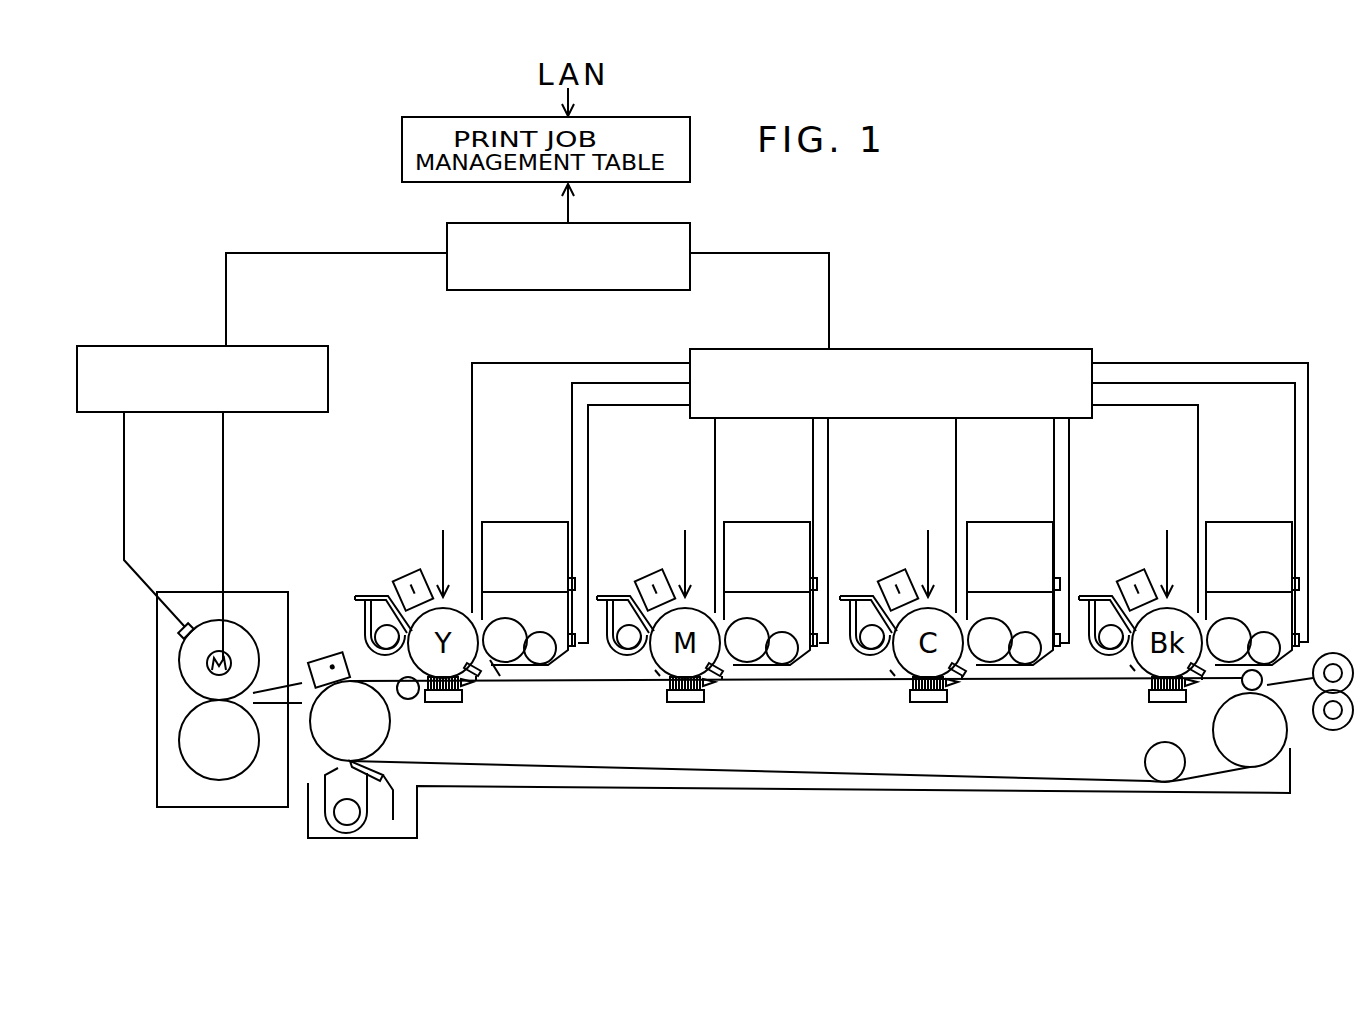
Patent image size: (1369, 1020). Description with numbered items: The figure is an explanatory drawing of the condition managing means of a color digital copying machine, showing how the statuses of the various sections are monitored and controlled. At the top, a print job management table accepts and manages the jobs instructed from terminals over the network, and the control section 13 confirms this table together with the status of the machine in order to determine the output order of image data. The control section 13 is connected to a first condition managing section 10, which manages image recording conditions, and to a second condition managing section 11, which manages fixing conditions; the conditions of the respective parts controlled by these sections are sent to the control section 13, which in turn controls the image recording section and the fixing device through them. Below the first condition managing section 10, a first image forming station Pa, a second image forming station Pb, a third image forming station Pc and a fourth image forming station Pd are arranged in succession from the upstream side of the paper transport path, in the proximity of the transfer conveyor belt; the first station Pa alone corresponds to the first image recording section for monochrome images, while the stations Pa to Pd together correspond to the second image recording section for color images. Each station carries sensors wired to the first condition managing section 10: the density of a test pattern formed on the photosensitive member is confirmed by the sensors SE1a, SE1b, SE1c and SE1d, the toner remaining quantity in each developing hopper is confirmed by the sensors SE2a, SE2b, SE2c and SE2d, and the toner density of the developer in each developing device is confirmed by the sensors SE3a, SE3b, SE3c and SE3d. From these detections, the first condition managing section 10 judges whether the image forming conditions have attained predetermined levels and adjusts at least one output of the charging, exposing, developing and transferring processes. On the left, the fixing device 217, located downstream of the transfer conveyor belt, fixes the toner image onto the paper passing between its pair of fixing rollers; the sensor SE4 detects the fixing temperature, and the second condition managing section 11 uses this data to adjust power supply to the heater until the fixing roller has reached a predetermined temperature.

The control section 13 is at (690, 236).
The second condition managing section 11 is at (328, 385).
The first condition managing section 10 is at (985, 349).
The fixing device 217 is at (157, 757).
The sensor SE4 is at (200, 624).
The sensor SE2a is at (1295, 578).
The sensor SE2b is at (1056, 578).
The sensor SE2c is at (813, 578).
The sensor SE2d is at (571, 578).
The sensor SE3a is at (1293, 648).
The sensor SE3b is at (1058, 634).
The sensor SE3c is at (815, 634).
The sensor SE3d is at (573, 634).
The sensor SE1a is at (1202, 678).
The sensor SE1b is at (963, 678).
The sensor SE1c is at (723, 678).
The sensor SE1d is at (479, 678).
The first image forming station Pa is at (1131, 668).
The second image forming station Pb is at (891, 675).
The third image forming station Pc is at (656, 675).
The fourth image forming station Pd is at (498, 670).